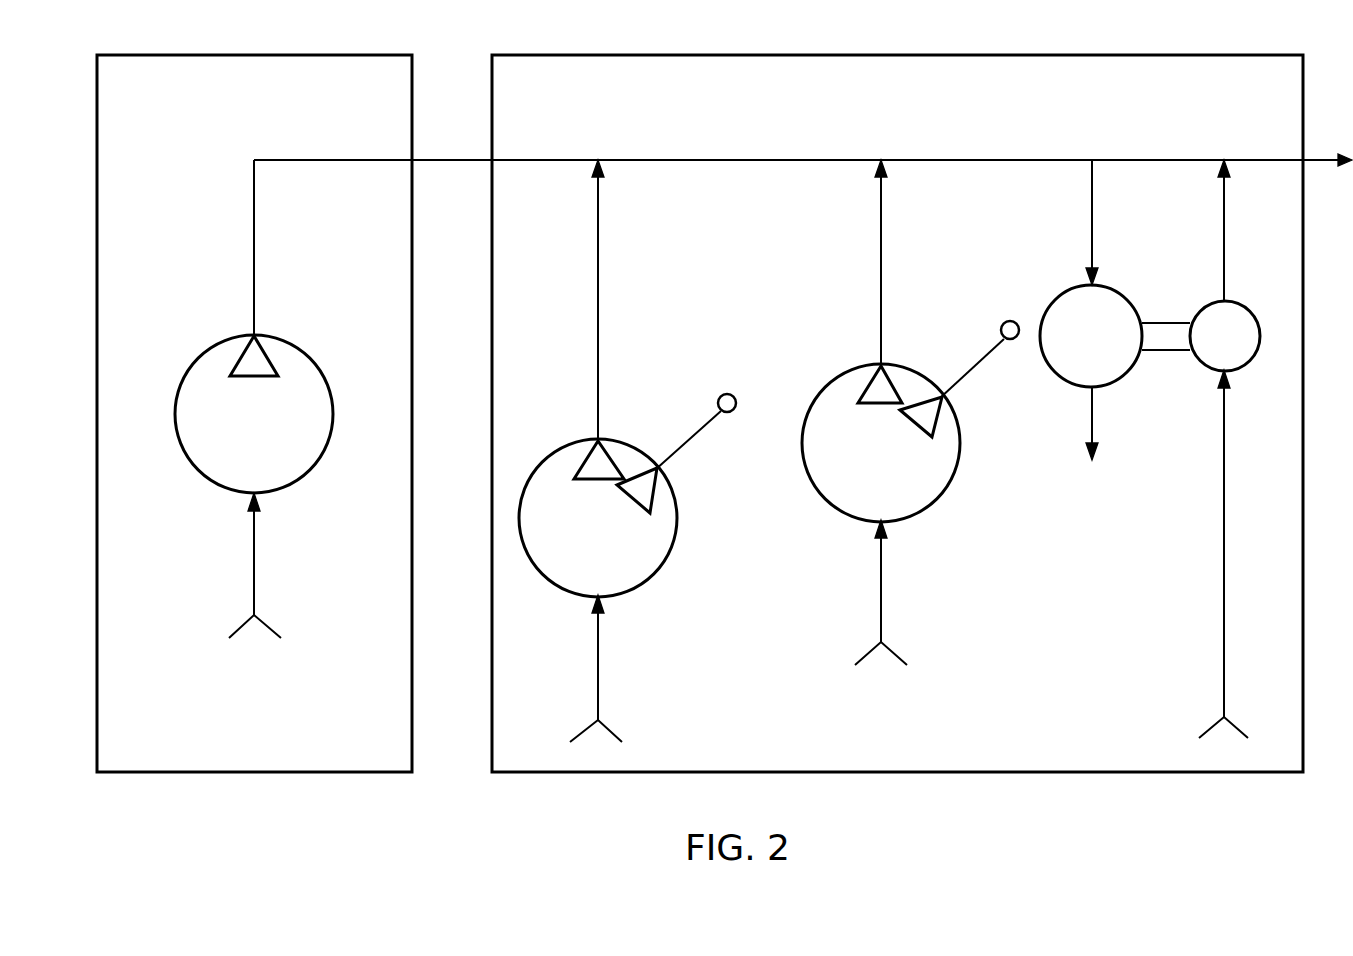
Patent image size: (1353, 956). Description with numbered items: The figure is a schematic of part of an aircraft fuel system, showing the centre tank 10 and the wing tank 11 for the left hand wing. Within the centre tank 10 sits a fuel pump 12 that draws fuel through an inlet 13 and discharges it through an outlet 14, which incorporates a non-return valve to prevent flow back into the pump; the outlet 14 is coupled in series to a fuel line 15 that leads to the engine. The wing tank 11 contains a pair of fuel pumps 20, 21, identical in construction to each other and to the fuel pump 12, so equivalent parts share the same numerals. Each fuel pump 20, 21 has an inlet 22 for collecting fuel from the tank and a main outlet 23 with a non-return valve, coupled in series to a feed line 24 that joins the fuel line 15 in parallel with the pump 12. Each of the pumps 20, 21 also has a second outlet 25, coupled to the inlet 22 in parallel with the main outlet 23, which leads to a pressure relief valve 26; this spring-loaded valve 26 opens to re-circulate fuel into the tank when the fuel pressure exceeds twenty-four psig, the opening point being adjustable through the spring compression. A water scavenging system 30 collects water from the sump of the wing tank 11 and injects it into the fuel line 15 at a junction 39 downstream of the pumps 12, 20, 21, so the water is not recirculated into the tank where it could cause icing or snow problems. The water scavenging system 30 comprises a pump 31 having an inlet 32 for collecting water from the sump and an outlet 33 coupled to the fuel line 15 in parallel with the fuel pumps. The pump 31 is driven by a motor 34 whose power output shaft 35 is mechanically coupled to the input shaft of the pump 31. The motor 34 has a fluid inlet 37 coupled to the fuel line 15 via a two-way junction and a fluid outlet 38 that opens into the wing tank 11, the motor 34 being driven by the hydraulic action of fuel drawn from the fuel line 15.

The centre tank 10 is at (412, 692).
The wing tank 11 is at (492, 332).
The fuel pump 12 is at (315, 468).
The inlet 13 is at (254, 578).
The outlet 14 is at (238, 357).
The fuel line 15 is at (254, 281).
The fuel pump 20 is at (660, 565).
The fuel pump 21 is at (945, 493).
The inlet 22 is at (598, 672).
The main outlet 23 is at (585, 482).
The feed line 24 is at (598, 368).
The second outlet 25 is at (640, 505).
The pressure relief valve 26 is at (730, 415).
The water scavenging system 30 is at (1122, 314).
The pump 31 is at (1200, 312).
The inlet 32 is at (1224, 445).
The outlet 33 is at (1224, 248).
The motor 34 is at (1128, 380).
The power output shaft 35 is at (1162, 352).
The fluid inlet 37 is at (1092, 243).
The fluid outlet 38 is at (1092, 428).
The junction 39 is at (1224, 160).